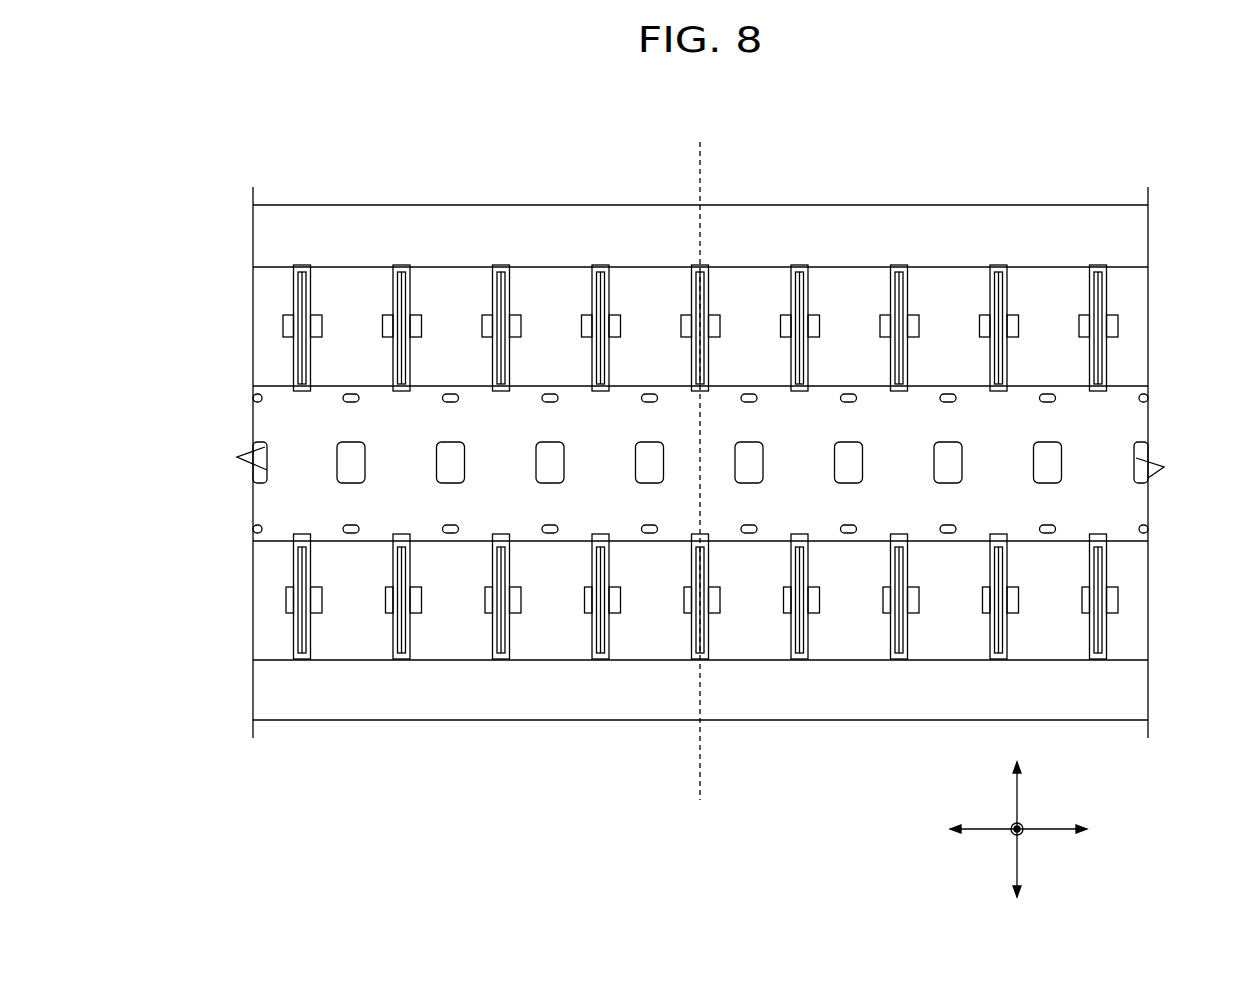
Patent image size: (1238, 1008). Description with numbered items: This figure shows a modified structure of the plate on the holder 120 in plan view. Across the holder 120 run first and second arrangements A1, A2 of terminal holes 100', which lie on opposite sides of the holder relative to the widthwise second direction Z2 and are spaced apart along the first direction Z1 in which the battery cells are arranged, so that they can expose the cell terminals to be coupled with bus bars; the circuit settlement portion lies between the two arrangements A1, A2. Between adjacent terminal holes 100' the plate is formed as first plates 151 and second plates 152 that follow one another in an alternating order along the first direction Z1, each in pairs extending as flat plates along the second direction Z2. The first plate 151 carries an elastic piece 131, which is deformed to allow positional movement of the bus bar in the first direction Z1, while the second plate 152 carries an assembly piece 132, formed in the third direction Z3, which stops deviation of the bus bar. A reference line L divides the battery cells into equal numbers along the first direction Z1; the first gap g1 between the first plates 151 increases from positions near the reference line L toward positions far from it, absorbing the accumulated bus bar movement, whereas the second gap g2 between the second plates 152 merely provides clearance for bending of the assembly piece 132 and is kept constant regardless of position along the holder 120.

The terminal hole 100' is at (652, 440).
The holder 120 is at (185, 453).
The elastic piece 131 is at (785, 329).
The assembly piece 132 is at (913, 330).
The first plate 151 is at (792, 281).
The second plate 152 is at (906, 282).
The first gap g1 is at (798, 277).
The second gap g2 is at (897, 277).
The first arrangement A1 is at (243, 323).
The second arrangement A2 is at (243, 603).
The reference line L is at (699, 461).
The first direction Z1 is at (1030, 831).
The second direction Z2 is at (1017, 817).
The third direction Z3 is at (1005, 818).